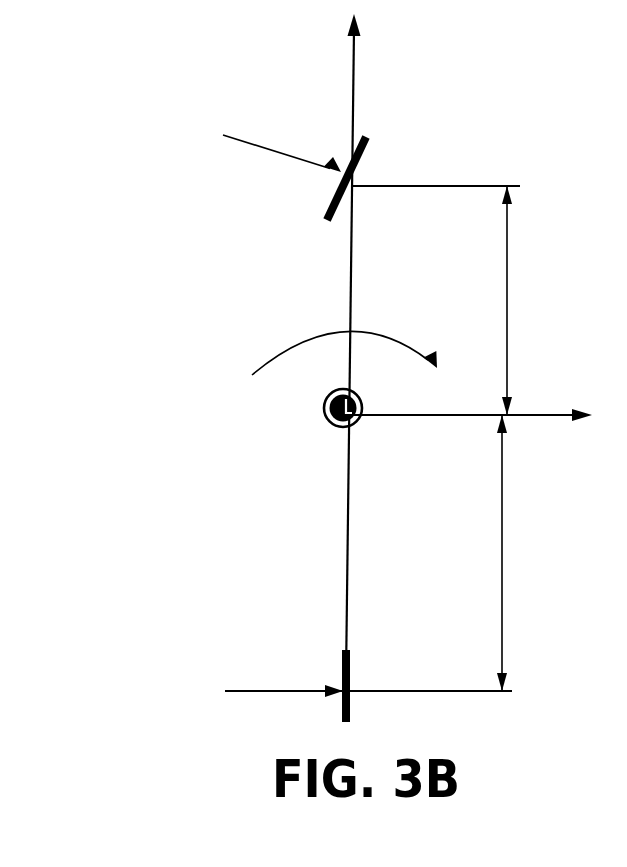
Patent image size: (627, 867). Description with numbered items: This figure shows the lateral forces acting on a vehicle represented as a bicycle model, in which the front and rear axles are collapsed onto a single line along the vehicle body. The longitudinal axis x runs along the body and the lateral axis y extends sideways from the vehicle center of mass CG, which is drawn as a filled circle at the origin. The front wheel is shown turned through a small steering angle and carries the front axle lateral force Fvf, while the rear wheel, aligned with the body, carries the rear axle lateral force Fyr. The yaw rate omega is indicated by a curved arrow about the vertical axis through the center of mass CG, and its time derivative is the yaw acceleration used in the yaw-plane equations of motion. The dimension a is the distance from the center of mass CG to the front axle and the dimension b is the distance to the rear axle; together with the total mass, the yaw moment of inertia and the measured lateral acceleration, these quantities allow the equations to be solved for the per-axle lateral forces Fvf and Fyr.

The longitudinal axis x is at (370, 333).
The lateral axis y is at (475, 392).
The yaw rate omega is at (348, 348).
The distance from center of mass to front axle a is at (526, 300).
The distance from center of mass to rear axle b is at (522, 553).
The front axle lateral force Fvf is at (294, 158).
The rear axle lateral force Fyr is at (360, 678).
The vehicle center of mass CG is at (343, 408).